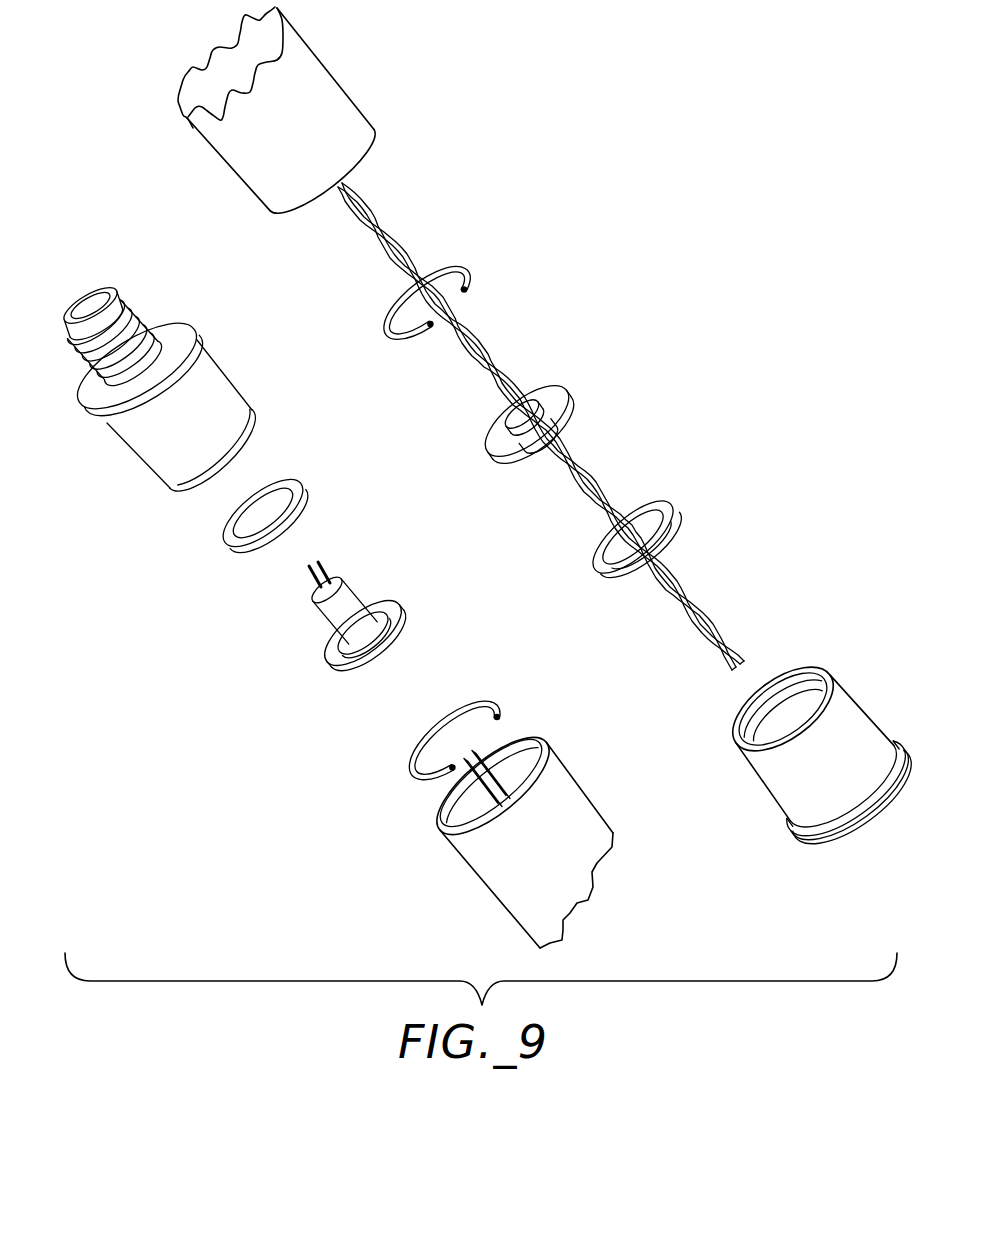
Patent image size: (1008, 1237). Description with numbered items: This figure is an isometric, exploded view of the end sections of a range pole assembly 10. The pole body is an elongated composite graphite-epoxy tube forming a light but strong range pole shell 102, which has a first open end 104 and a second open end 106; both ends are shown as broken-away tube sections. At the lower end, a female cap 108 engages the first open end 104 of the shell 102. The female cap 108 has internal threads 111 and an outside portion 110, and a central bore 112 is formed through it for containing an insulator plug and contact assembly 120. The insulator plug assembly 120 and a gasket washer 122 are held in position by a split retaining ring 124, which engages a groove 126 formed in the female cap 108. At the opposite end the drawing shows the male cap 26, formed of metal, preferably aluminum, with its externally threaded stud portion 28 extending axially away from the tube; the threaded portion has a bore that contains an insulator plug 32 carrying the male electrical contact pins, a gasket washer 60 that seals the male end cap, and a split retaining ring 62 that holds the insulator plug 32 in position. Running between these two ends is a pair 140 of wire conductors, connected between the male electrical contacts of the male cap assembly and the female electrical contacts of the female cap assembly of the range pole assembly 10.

The range pole assembly 10 is at (512, 182).
The range pole shell 102 is at (302, 110).
The first open end 104 is at (360, 157).
The pair of wire conductors 140 is at (393, 247).
The split retaining ring 124 is at (477, 270).
The insulator plug and contact assembly 120 is at (495, 437).
The gasket washer 122 is at (598, 558).
The male cap 26 is at (193, 377).
The externally threaded stud portion 28 is at (128, 305).
The gasket washer 60 is at (223, 533).
The insulator plug 32 is at (327, 650).
The split retaining ring 62 is at (412, 768).
The second open end 106 is at (473, 817).
The female cap 108 is at (784, 766).
The groove 126 is at (737, 737).
The central bore 112 is at (783, 722).
The outside portion 110 is at (810, 840).
The internal threads 111 is at (863, 818).